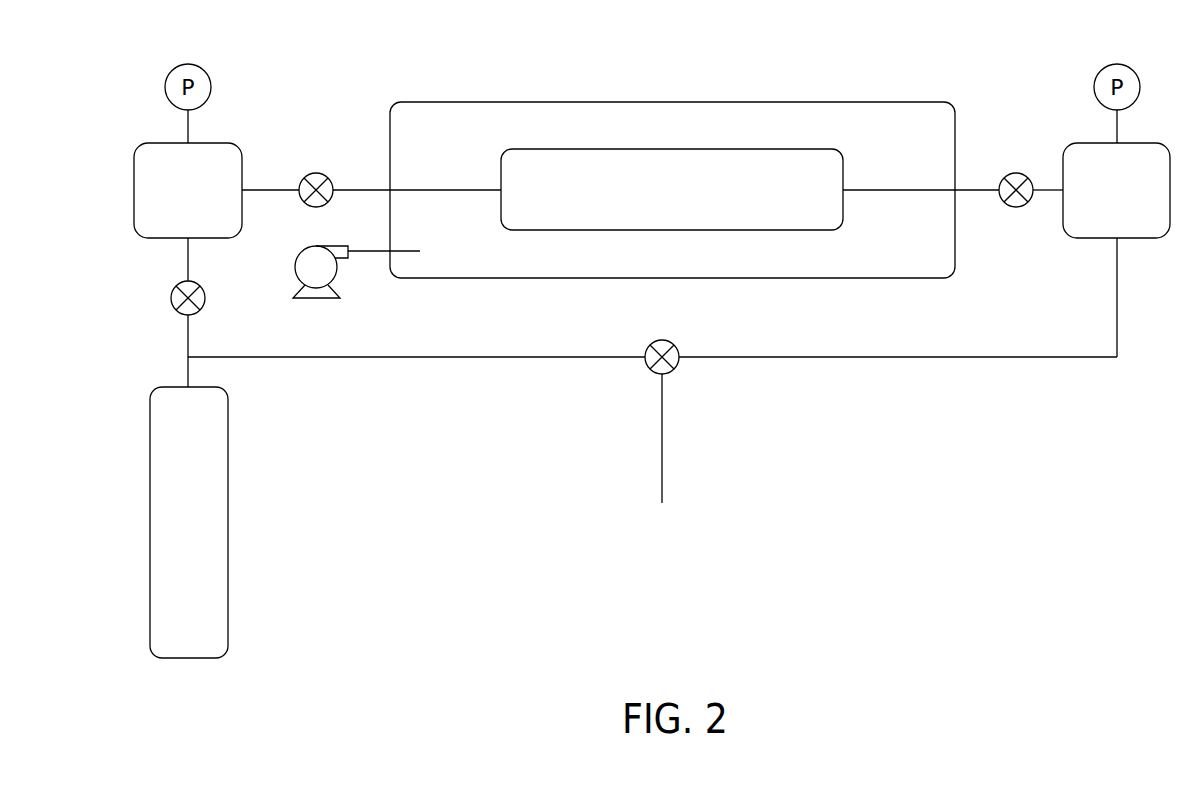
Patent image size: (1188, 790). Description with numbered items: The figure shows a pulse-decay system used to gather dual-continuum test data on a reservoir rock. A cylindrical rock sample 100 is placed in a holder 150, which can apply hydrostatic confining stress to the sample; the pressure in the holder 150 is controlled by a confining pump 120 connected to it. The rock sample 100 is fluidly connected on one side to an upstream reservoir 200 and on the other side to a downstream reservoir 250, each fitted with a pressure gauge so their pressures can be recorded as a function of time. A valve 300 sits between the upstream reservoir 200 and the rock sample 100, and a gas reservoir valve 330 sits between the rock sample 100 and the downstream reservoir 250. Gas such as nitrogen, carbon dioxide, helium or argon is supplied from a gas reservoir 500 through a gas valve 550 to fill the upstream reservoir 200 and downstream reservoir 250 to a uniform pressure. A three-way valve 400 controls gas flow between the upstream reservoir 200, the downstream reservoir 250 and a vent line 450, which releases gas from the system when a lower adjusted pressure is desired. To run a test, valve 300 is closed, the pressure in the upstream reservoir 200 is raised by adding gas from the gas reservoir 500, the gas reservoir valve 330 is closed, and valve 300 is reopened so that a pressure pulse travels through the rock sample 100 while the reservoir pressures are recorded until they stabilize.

The rock sample 100 is at (647, 205).
The confining pump 120 is at (313, 298).
The holder 150 is at (593, 102).
The upstream reservoir 200 is at (161, 205).
The downstream reservoir 250 is at (1089, 205).
The valve 300 is at (316, 172).
The gas reservoir valve 330 is at (1016, 172).
The three-way valve 400 is at (650, 346).
The vent line 450 is at (662, 470).
The gas reservoir 500 is at (163, 538).
The gas valve 550 is at (171, 296).